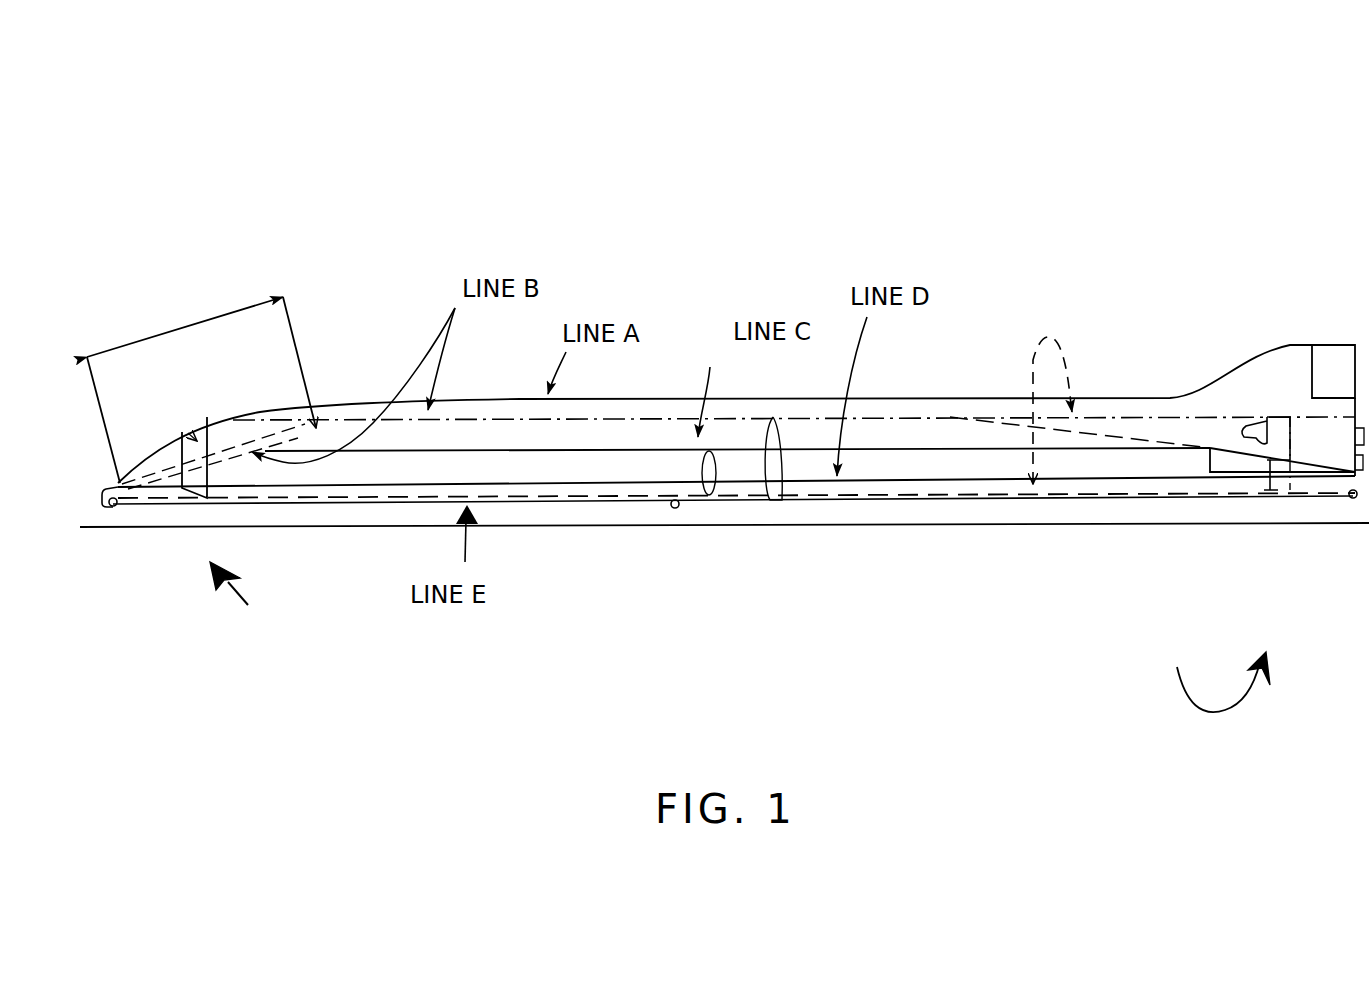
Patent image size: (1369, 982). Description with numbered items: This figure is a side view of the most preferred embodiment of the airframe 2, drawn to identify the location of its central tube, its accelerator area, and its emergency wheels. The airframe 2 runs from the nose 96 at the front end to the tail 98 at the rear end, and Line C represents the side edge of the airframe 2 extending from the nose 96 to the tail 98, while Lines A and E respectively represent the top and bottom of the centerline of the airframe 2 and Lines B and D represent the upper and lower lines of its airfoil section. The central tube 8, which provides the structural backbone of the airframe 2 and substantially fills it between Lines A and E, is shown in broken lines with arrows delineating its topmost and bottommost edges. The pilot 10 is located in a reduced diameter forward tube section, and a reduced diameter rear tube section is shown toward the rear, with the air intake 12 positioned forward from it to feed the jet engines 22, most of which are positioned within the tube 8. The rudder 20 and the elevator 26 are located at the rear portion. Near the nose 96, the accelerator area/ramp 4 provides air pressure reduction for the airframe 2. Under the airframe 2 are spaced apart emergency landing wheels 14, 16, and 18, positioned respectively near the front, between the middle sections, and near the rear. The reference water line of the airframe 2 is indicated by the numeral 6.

The airframe 2 is at (384, 130).
The accelerator area/ramp 4 is at (187, 323).
The reference water line 6 is at (982, 527).
The central tube 8 is at (1052, 389).
The pilot 10 is at (204, 417).
The air intake 12 is at (1265, 417).
The emergency landing wheel 14 is at (115, 506).
The emergency landing wheel 16 is at (675, 508).
The emergency landing wheel 18 is at (1352, 498).
The rudder 20 is at (1325, 368).
The jet engines 22 is at (1327, 453).
The elevator 26 is at (1237, 463).
The nose 96 is at (251, 590).
The tail 98 is at (1213, 674).